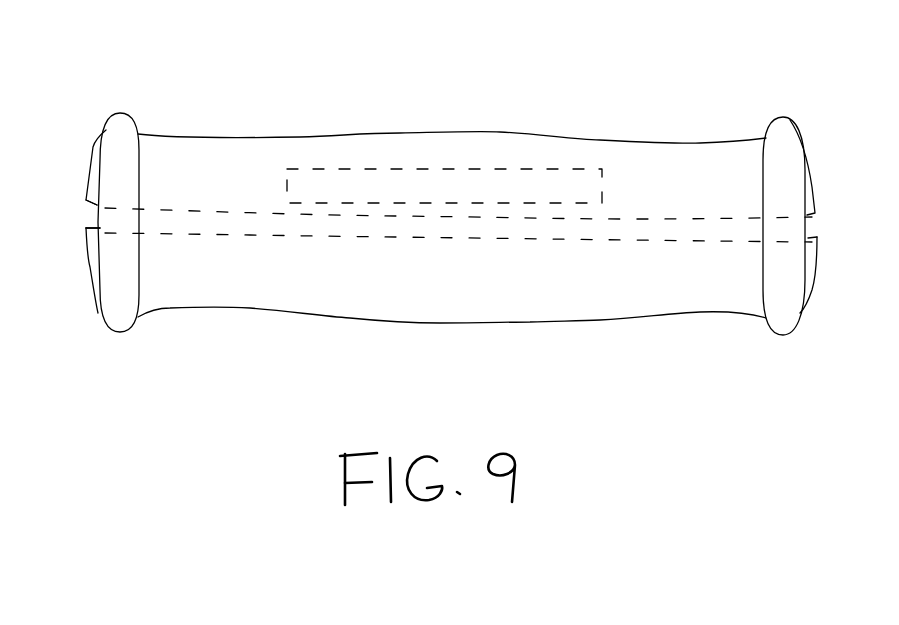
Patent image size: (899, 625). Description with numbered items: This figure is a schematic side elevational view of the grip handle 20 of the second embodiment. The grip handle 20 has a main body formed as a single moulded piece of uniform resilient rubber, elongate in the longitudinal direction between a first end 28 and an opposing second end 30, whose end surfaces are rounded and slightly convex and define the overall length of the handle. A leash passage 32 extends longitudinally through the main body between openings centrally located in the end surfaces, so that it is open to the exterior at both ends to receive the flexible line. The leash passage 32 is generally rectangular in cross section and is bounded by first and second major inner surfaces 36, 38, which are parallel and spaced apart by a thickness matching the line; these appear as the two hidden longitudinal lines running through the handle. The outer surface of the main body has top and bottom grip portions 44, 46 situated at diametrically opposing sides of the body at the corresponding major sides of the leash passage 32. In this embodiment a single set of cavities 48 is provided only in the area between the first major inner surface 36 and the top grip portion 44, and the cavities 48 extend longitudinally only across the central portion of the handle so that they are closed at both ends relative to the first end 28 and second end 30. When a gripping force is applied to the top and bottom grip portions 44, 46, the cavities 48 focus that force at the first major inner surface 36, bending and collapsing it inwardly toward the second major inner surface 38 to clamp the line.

The grip handle 20 is at (226, 103).
The first end 28 is at (97, 264).
The second end 30 is at (812, 190).
The leash passage 32 is at (74, 220).
The first major inner surface 36 is at (243, 210).
The second major inner surface 38 is at (238, 237).
The top grip portion 44 is at (402, 133).
The bottom grip portion 46 is at (442, 322).
The cavities 48 is at (520, 170).